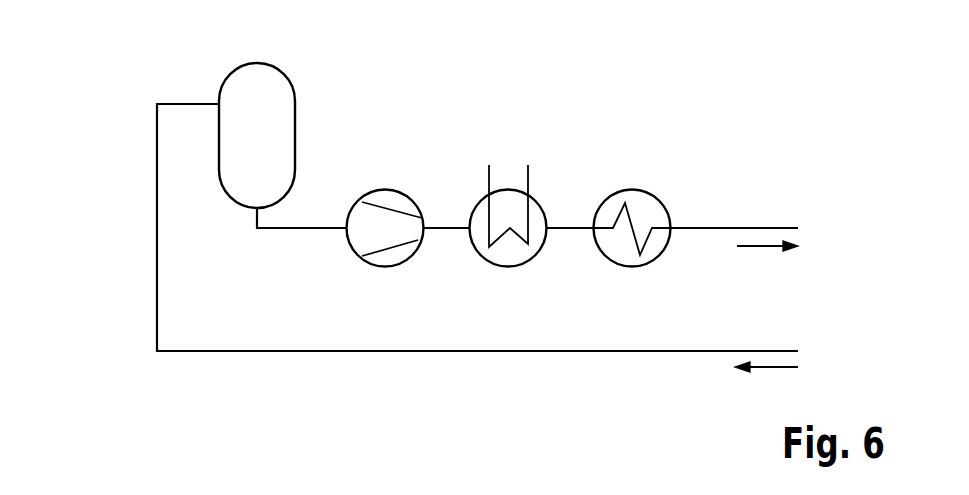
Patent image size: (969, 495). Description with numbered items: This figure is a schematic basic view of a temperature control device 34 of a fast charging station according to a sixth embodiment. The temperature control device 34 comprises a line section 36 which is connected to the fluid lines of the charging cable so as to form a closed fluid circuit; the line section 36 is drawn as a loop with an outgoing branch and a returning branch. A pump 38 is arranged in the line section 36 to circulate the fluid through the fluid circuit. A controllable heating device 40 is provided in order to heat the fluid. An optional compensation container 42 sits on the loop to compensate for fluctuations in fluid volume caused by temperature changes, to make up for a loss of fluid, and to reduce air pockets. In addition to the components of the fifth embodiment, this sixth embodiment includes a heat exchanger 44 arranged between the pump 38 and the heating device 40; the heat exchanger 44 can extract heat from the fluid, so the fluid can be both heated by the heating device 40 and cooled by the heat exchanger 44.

The temperature control device 34 is at (122, 118).
The line section 36 is at (157, 281).
The pump 38 is at (385, 190).
The controllable heating device 40 is at (632, 190).
The compensation container 42 is at (290, 79).
The heat exchanger 44 is at (505, 190).